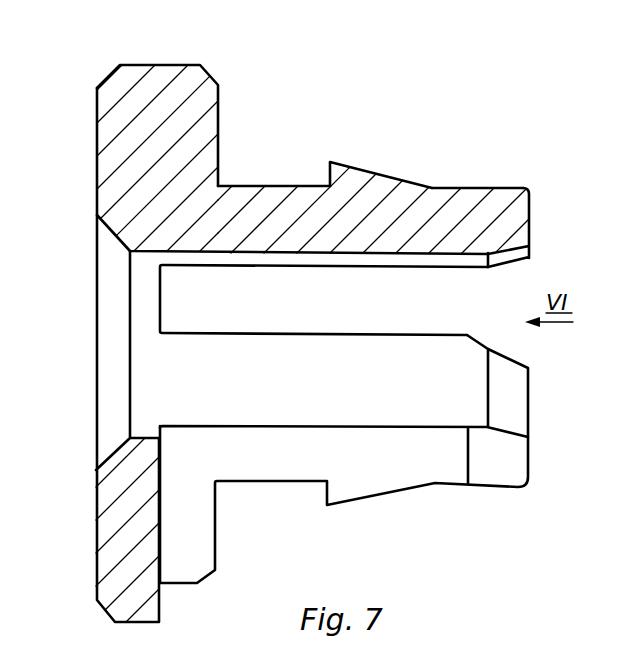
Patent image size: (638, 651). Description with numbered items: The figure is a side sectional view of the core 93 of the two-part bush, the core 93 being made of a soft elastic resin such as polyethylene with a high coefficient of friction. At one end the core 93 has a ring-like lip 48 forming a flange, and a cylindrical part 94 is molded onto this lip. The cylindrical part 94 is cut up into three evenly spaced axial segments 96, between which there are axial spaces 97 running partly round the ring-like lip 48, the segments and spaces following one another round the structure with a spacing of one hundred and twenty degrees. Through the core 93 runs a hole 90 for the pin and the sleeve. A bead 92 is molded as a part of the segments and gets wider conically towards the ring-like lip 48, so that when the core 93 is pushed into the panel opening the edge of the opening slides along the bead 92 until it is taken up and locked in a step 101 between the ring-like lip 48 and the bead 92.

The ring-like lip 48 is at (174, 100).
The hole 90 is at (92, 288).
The bead 92 is at (350, 183).
The core 93 is at (430, 158).
The cylindrical part 94 is at (490, 208).
The axial segments 96 is at (350, 403).
The axial spaces 97 is at (340, 309).
The step 101 is at (280, 173).